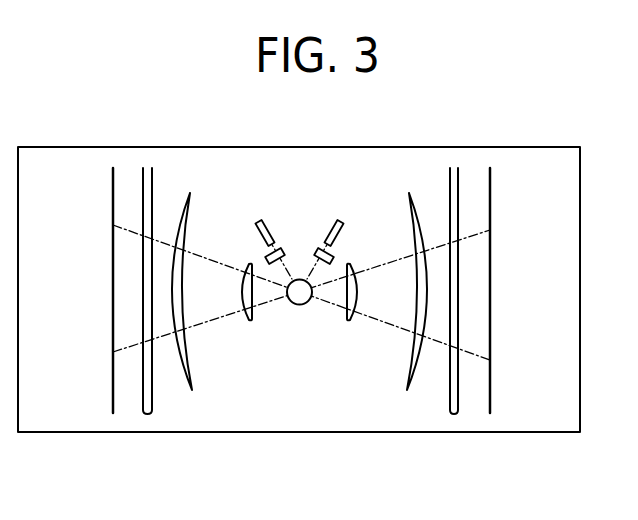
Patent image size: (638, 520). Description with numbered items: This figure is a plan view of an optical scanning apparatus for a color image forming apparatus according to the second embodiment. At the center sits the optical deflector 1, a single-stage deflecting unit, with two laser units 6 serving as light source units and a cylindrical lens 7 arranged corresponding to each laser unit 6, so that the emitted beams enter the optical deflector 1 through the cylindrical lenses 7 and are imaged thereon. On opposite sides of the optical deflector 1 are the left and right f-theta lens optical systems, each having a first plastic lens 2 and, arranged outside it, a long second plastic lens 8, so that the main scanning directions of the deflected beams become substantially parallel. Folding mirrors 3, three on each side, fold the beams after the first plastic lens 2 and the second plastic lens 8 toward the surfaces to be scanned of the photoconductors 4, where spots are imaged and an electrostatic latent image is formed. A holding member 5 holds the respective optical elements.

The optical deflector 1 is at (302, 306).
The first plastic lens 2 is at (250, 321).
The folding mirror 3 is at (152, 197).
The photoconductor 4 is at (113, 199).
The holding member 5 is at (578, 296).
The laser unit 6 is at (259, 221).
The cylindrical lens 7 is at (266, 258).
The second plastic lens 8 is at (193, 381).